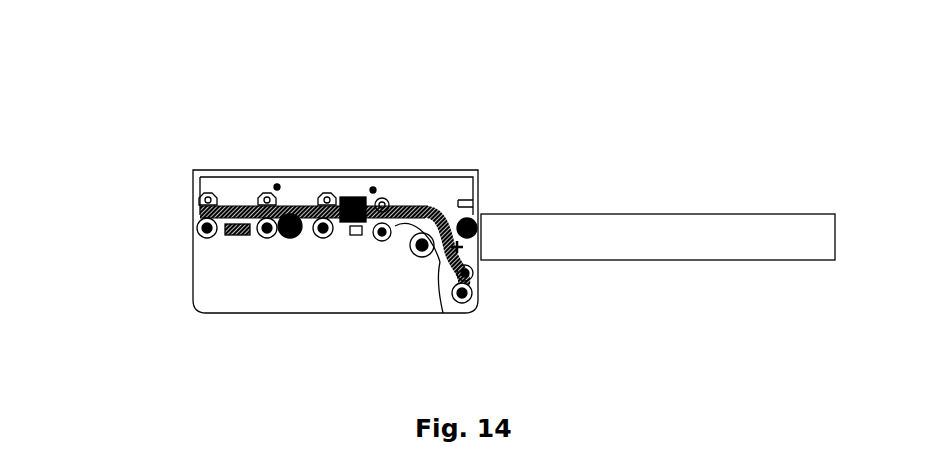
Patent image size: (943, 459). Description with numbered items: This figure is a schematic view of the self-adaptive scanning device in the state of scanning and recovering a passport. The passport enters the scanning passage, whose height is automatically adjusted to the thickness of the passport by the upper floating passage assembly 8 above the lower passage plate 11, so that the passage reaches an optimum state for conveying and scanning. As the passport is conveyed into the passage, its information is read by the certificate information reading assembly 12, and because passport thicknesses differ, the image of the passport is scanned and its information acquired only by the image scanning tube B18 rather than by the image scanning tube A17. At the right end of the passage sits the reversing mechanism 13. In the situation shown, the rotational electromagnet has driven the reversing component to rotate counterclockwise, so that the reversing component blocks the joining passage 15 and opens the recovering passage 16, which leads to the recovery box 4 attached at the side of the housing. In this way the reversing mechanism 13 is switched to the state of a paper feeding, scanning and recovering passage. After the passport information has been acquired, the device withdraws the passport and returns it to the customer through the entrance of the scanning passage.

The element passport is at (192, 204).
The upper floating passage assembly 8 is at (295, 198).
The image scanning tube A A17 is at (357, 183).
The recovering passage 16 is at (480, 212).
The recovery box 4 is at (558, 214).
The lower passage plate 11 is at (194, 256).
The certificate information reading assembly 12 is at (235, 241).
The image scanning tube B B18 is at (293, 240).
The reversing mechanism 13 is at (422, 260).
The joining passage 15 is at (450, 316).